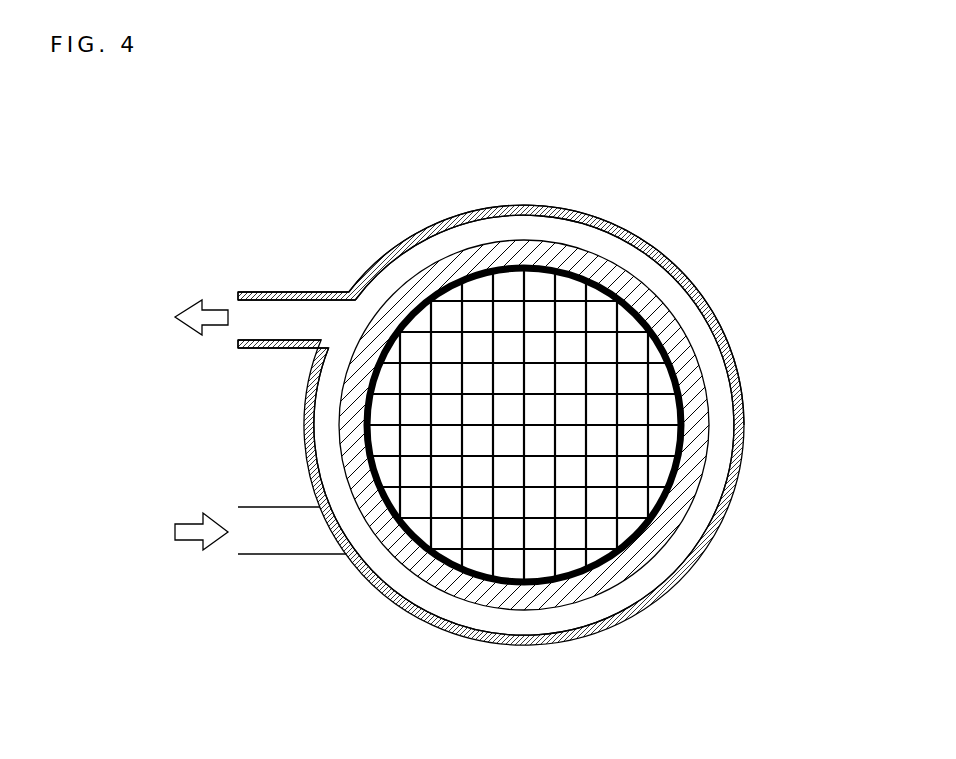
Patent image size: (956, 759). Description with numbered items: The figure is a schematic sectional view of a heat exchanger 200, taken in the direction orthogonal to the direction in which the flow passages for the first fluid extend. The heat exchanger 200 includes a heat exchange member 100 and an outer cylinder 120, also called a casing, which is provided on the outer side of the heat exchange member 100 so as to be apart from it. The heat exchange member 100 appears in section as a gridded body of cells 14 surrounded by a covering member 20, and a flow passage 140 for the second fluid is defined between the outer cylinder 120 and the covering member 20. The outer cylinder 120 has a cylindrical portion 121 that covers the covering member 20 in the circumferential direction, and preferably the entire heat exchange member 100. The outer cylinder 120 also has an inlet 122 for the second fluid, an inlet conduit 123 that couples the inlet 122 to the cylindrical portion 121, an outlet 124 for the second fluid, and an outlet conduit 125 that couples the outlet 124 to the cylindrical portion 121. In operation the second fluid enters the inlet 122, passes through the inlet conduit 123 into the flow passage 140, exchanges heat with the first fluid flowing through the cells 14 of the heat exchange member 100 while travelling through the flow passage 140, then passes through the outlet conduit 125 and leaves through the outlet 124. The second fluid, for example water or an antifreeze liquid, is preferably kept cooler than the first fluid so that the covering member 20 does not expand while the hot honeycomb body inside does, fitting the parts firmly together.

The heat exchanger 200 is at (764, 243).
The heat exchange member 100 is at (630, 575).
The cells 14 is at (637, 503).
The covering member 20 is at (692, 370).
The outer cylinder 120 is at (402, 238).
The cylindrical portion 121 is at (533, 208).
The inlet 122 is at (240, 537).
The inlet conduit 123 is at (288, 557).
The outlet 124 is at (240, 325).
The outlet conduit 125 is at (288, 292).
The flow passage 140 is at (725, 435).